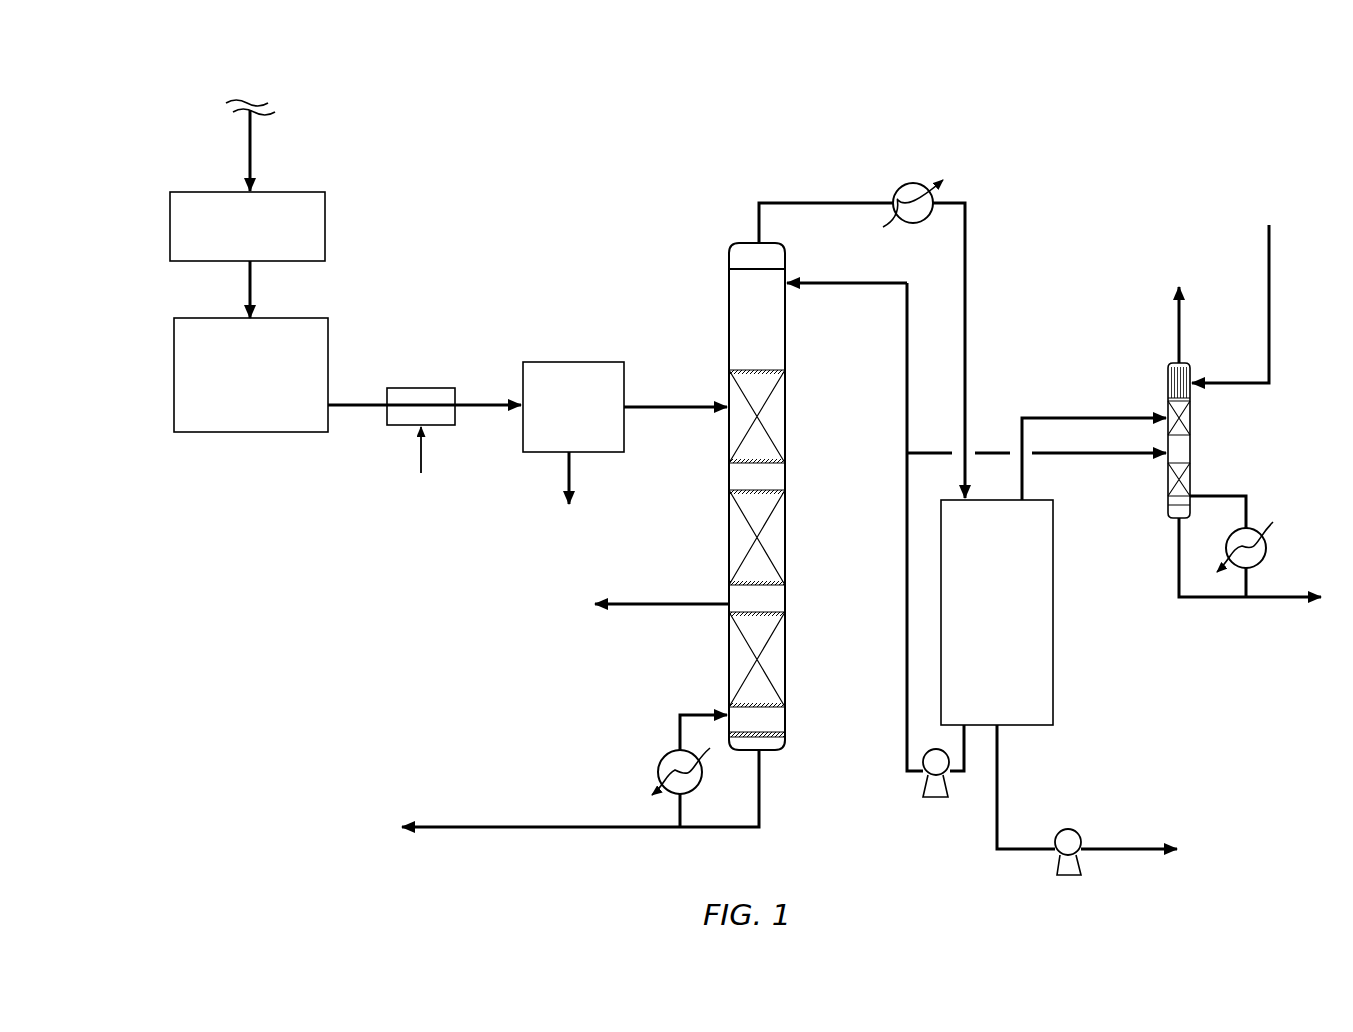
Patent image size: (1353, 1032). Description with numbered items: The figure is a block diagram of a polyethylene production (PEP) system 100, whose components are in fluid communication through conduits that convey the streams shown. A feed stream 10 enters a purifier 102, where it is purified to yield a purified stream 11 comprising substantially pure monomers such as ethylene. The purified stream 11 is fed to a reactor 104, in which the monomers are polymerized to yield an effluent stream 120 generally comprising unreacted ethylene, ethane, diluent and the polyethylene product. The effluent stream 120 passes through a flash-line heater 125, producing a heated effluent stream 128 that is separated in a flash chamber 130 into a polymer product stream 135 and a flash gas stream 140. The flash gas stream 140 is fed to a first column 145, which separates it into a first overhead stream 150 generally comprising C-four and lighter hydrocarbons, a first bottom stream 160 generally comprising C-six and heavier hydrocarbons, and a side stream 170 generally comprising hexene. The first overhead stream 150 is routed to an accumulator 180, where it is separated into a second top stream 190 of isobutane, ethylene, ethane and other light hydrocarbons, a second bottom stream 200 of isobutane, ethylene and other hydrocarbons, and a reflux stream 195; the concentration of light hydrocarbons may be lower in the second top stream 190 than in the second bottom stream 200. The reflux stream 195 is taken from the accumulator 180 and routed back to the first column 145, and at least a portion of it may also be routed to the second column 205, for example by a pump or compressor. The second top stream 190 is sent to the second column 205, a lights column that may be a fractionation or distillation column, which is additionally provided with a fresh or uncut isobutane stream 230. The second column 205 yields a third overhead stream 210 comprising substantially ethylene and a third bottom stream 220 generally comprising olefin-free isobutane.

The feed stream 10 is at (254, 158).
The purified stream 11 is at (254, 287).
The polyethylene production (PEP) system 100 is at (533, 135).
The purifier 102 is at (247, 226).
The reactor 104 is at (251, 375).
The effluent stream 120 is at (348, 404).
The flash-line heater 125 is at (421, 451).
The heated effluent stream 128 is at (482, 404).
The flash chamber 130 is at (565, 358).
The polymer product stream 135 is at (565, 470).
The flash gas stream 140 is at (673, 404).
The first column 145 is at (727, 623).
The first overhead stream 150 is at (797, 206).
The first bottom stream 160 is at (558, 829).
The side stream 170 is at (668, 602).
The accumulator 180 is at (1056, 613).
The second top stream 190 is at (1068, 413).
The reflux stream 195 is at (902, 644).
The second bottom stream 200 is at (999, 785).
The second column 205 is at (1193, 440).
The third overhead stream 210 is at (1174, 339).
The third bottom stream 220 is at (1284, 601).
The isobutane stream 230 is at (1266, 283).